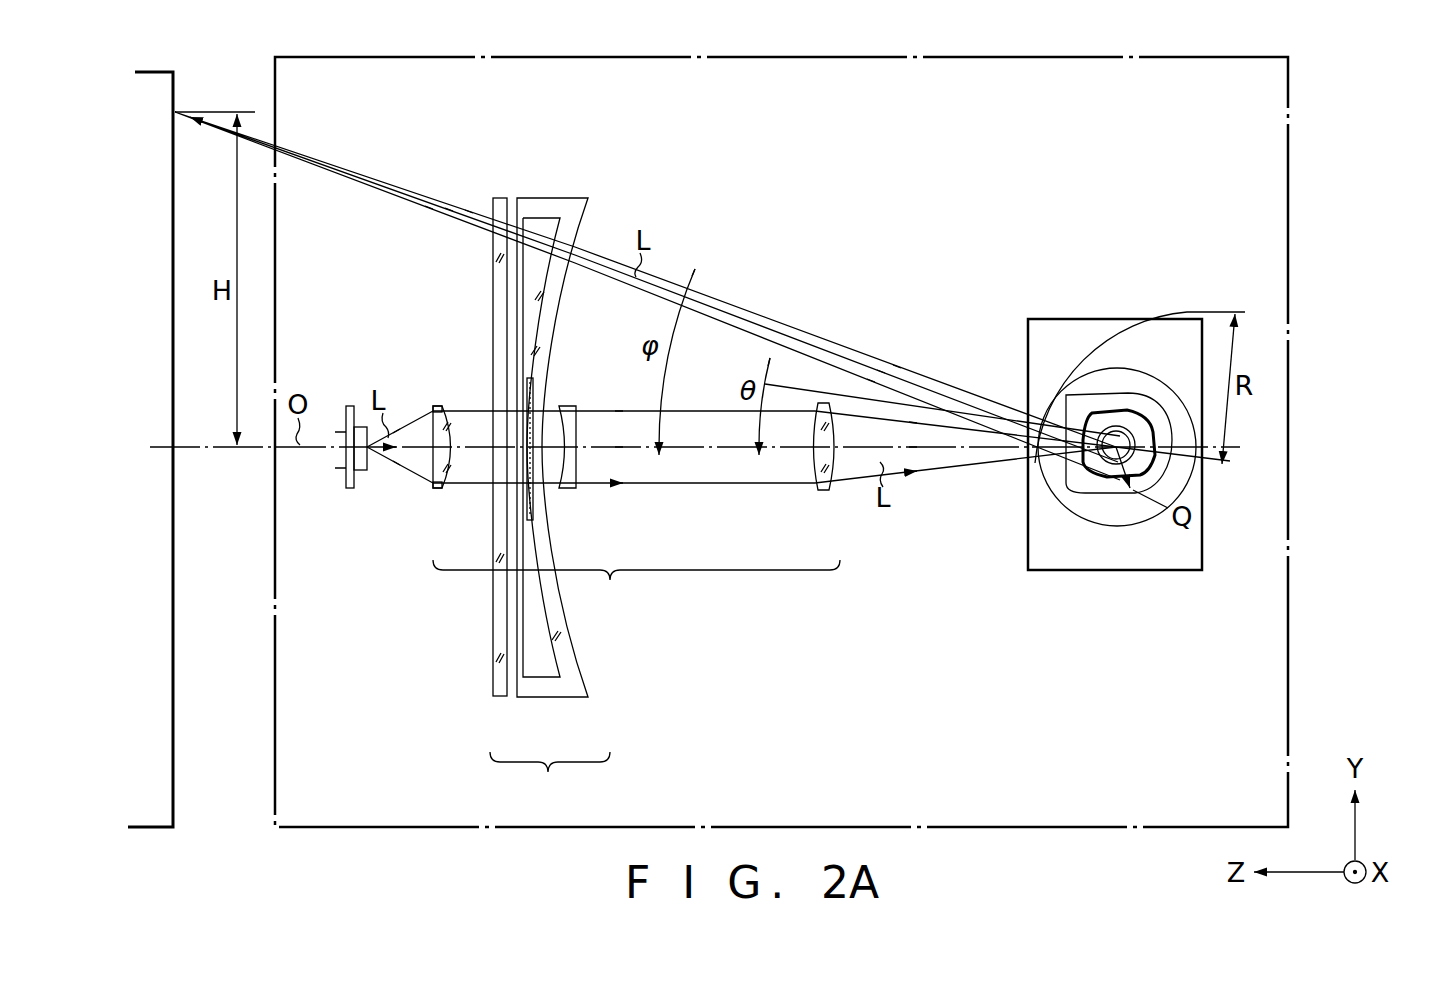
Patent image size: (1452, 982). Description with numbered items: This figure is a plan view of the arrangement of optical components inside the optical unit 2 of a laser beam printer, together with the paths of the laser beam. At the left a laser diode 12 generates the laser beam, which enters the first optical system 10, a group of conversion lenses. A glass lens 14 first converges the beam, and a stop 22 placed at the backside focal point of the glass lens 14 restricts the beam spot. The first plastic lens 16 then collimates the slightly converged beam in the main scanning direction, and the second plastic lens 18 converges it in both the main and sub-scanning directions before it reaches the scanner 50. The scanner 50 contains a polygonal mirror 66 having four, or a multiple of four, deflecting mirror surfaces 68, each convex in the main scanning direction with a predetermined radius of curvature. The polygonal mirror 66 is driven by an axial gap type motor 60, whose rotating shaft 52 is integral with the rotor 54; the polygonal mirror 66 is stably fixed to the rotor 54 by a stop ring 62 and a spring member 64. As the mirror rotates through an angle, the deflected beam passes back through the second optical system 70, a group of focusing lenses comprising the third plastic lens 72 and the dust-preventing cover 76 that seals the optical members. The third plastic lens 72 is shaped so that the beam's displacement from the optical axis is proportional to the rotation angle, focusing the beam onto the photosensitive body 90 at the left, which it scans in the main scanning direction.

The optical unit 2 is at (1290, 110).
The first optical system 10 is at (636, 584).
The laser diode 12 is at (350, 490).
The glass lens 14 is at (437, 490).
The first plastic lens 16 is at (571, 490).
The second plastic lens 18 is at (822, 492).
The stop 22 is at (535, 385).
The scanner 50 is at (1086, 318).
The rotating shaft 52 is at (1147, 437).
The rotor 54 is at (1138, 492).
The axial gap type motor 60 is at (1062, 390).
The stop ring 62 is at (1135, 430).
The spring member 64 is at (1202, 478).
The polygonal mirror 66 is at (1108, 487).
The deflecting mirror surface 68 is at (1062, 482).
The second optical system 70 is at (550, 779).
The third plastic lens 72 is at (577, 698).
The dust-preventing cover 76 is at (500, 698).
The photosensitive body 90 is at (175, 790).